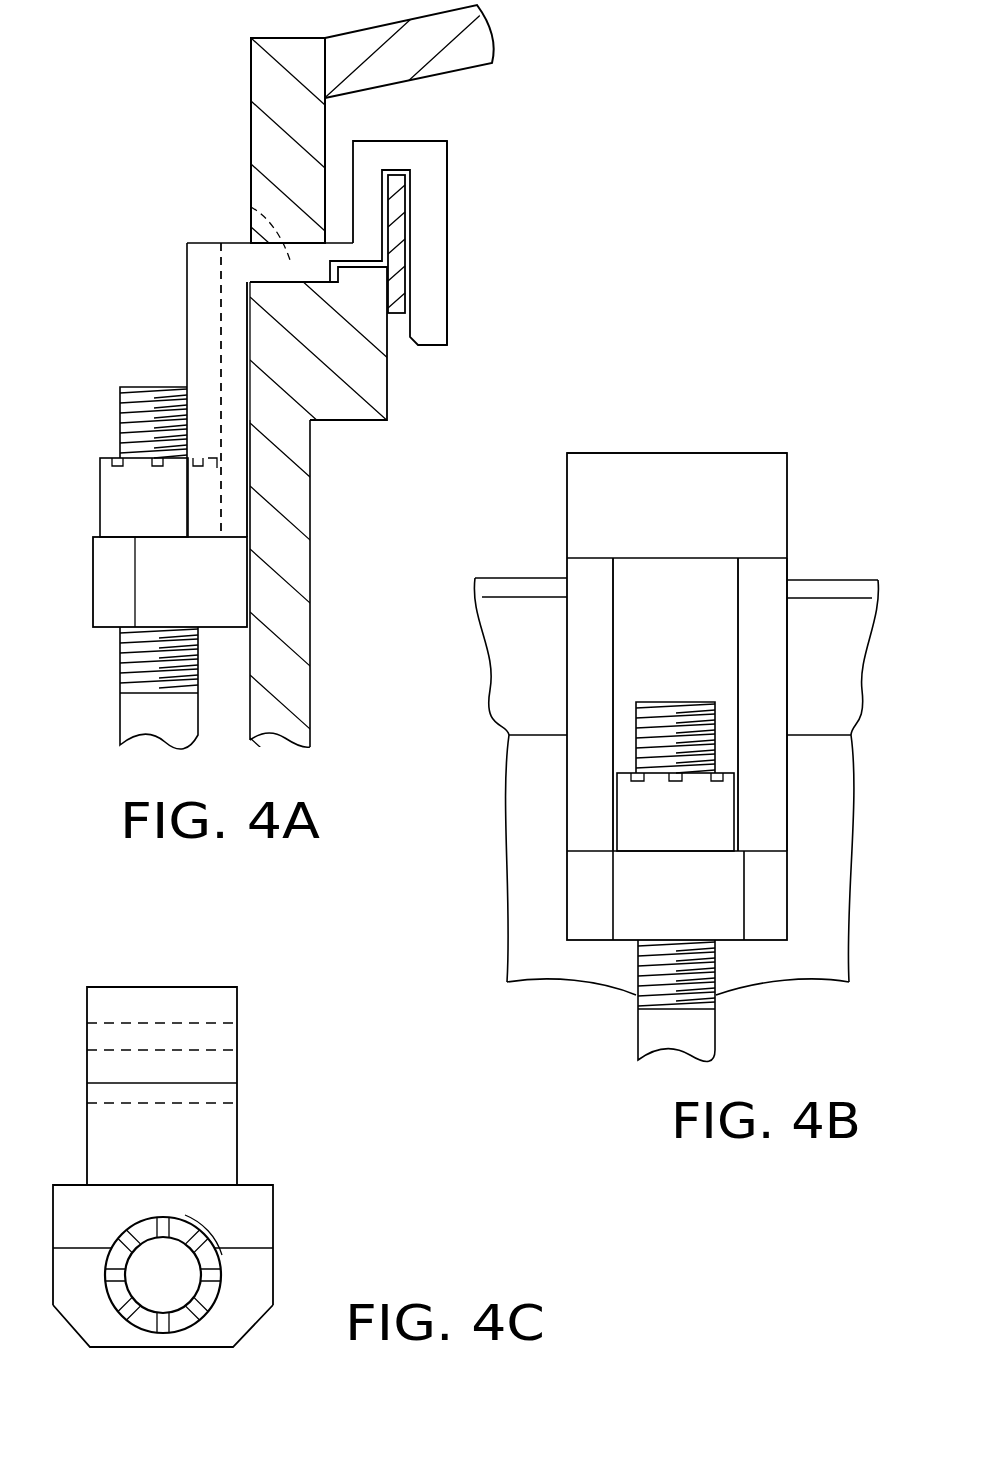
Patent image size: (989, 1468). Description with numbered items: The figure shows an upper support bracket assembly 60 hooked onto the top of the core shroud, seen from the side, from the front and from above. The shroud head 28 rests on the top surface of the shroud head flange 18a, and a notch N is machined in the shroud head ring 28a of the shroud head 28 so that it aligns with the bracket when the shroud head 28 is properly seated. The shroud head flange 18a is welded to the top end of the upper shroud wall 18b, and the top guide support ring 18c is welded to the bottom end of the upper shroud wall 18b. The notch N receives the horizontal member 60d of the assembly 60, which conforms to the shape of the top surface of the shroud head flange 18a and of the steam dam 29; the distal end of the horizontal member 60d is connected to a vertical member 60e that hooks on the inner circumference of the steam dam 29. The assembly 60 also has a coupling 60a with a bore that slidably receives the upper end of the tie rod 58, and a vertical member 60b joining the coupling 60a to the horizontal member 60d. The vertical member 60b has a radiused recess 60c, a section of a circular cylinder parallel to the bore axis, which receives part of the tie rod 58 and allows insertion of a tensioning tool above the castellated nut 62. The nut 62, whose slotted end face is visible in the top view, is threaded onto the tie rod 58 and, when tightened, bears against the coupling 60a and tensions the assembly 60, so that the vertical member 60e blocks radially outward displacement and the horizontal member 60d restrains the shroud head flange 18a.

In FIG. 4A, the shroud head 28 is at (358, 25).
In FIG. 4A, the shroud head ring 28a is at (251, 125).
In FIG. 4A, the notch N is at (245, 203).
In FIG. 4A, the steam dam 29 is at (400, 225).
In FIG. 4A, the upper support bracket assembly 60 is at (172, 288).
In FIG. 4B, the upper support bracket assembly 60 is at (743, 438).
In FIG. 4C, the upper support bracket assembly 60 is at (258, 1172).
In FIG. 4A, the coupling 60a is at (93, 582).
In FIG. 4C, the coupling 60a is at (185, 1348).
In FIG. 4A, the vertical member 60b is at (235, 498).
In FIG. 4B, the vertical member 60b is at (787, 633).
In FIG. 4C, the vertical member 60b is at (275, 1207).
In FIG. 4A, the radiused recess 60c is at (197, 318).
In FIG. 4B, the radiused recess 60c is at (687, 577).
In FIG. 4C, the radiused recess 60c is at (217, 1257).
In FIG. 4A, the horizontal member 60d is at (372, 153).
In FIG. 4B, the horizontal member 60d is at (628, 467).
In FIG. 4C, the horizontal member 60d is at (110, 1060).
In FIG. 4A, the vertical member 60e is at (448, 280).
In FIG. 4A, the shroud head flange 18a is at (375, 388).
In FIG. 4A, the upper shroud wall 18b is at (293, 500).
In FIG. 4B, the upper shroud wall 18b is at (529, 896).
In FIG. 4B, the top guide support ring 18c is at (793, 607).
In FIG. 4A, the castellated nut 62 is at (115, 488).
In FIG. 4B, the castellated nut 62 is at (633, 807).
In FIG. 4C, the castellated nut 62 is at (108, 1300).
In FIG. 4A, the tie rod 58 is at (135, 710).
In FIG. 4B, the tie rod 58 is at (715, 727).
In FIG. 4C, the tie rod 58 is at (183, 1292).